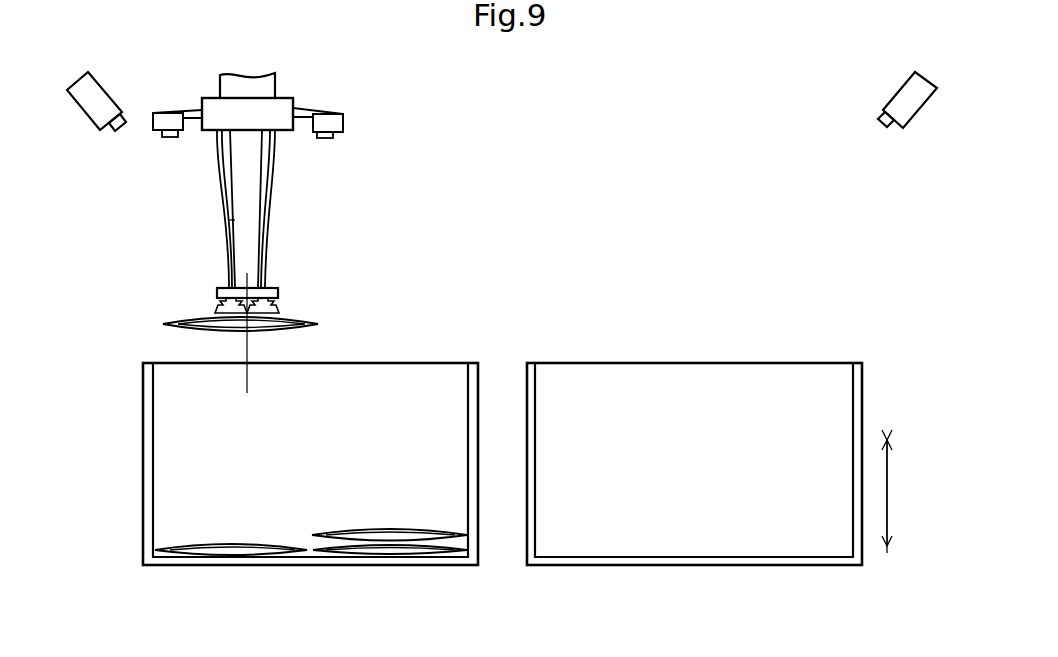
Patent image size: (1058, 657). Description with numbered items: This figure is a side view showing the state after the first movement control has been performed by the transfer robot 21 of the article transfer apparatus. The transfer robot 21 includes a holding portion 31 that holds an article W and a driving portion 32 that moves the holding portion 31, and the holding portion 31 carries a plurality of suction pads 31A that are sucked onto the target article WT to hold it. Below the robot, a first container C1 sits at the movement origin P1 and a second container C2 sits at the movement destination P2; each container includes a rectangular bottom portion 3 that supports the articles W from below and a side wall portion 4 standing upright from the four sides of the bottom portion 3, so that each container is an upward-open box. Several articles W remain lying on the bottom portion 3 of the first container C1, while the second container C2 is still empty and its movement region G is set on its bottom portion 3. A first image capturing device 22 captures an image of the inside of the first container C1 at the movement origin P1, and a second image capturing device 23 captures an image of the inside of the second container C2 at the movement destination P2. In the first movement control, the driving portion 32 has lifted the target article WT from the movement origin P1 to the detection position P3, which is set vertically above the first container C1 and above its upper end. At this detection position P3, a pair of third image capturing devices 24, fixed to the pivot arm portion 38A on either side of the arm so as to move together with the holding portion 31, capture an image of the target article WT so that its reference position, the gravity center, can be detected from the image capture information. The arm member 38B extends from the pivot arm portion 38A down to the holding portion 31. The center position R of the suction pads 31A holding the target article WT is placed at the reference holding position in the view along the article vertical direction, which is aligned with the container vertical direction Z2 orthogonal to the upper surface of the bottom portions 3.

The first image capturing device 22 is at (95, 90).
The second image capturing device 23 is at (903, 92).
The transfer robot 21 is at (337, 93).
The pivot arm portion 38A is at (267, 93).
The third image capturing device 24 is at (153, 120).
The driving portion 32 is at (277, 185).
The arm member 38B is at (240, 219).
The holding portion 31 is at (270, 283).
The suction pad 31A is at (222, 313).
The center position R is at (242, 353).
The target article WT is at (307, 308).
The detection position P3 is at (323, 327).
The first container C1 is at (168, 348).
The bottom portion 3 is at (327, 565).
The side wall portion 4 is at (142, 460).
The movement origin P1 is at (447, 350).
The movement destination P2 is at (600, 353).
The second container C2 is at (755, 352).
The article W is at (397, 547).
The movement region G is at (577, 542).
The container vertical direction Z2 is at (913, 496).